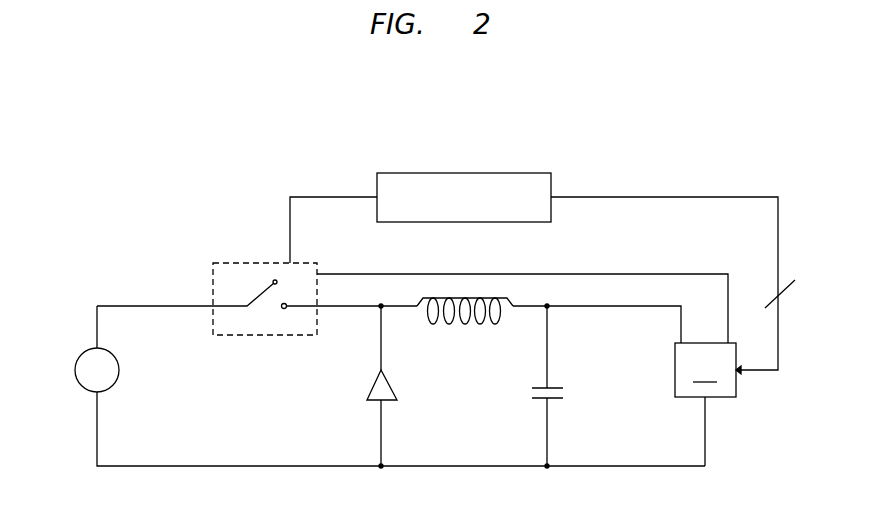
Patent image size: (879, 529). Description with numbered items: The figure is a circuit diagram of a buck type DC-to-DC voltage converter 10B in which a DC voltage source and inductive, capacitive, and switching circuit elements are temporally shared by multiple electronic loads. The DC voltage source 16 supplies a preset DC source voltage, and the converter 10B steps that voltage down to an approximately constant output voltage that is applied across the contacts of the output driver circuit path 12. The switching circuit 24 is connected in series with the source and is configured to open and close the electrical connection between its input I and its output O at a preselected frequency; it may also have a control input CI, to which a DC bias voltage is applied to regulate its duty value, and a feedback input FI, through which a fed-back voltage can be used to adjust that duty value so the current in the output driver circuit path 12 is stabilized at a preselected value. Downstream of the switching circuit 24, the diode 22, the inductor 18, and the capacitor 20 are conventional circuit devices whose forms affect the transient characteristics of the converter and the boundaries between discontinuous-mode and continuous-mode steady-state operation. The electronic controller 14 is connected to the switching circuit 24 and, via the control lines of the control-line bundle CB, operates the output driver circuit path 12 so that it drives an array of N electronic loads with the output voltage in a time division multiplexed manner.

The DC-to-DC voltage converter 10B is at (727, 153).
The output driver circuit path 12 is at (705, 404).
The electronic controller 14 is at (555, 177).
The DC voltage source 16 is at (80, 386).
The inductor 18 is at (465, 333).
The capacitor 20 is at (520, 410).
The diode 22 is at (367, 396).
The switching circuit 24 is at (298, 337).
The control input CI is at (290, 262).
The feedback input FI is at (320, 274).
The input I is at (212, 305).
The output O is at (320, 308).
The control-line bundle CB is at (782, 262).
The number of electronic loads N is at (802, 306).